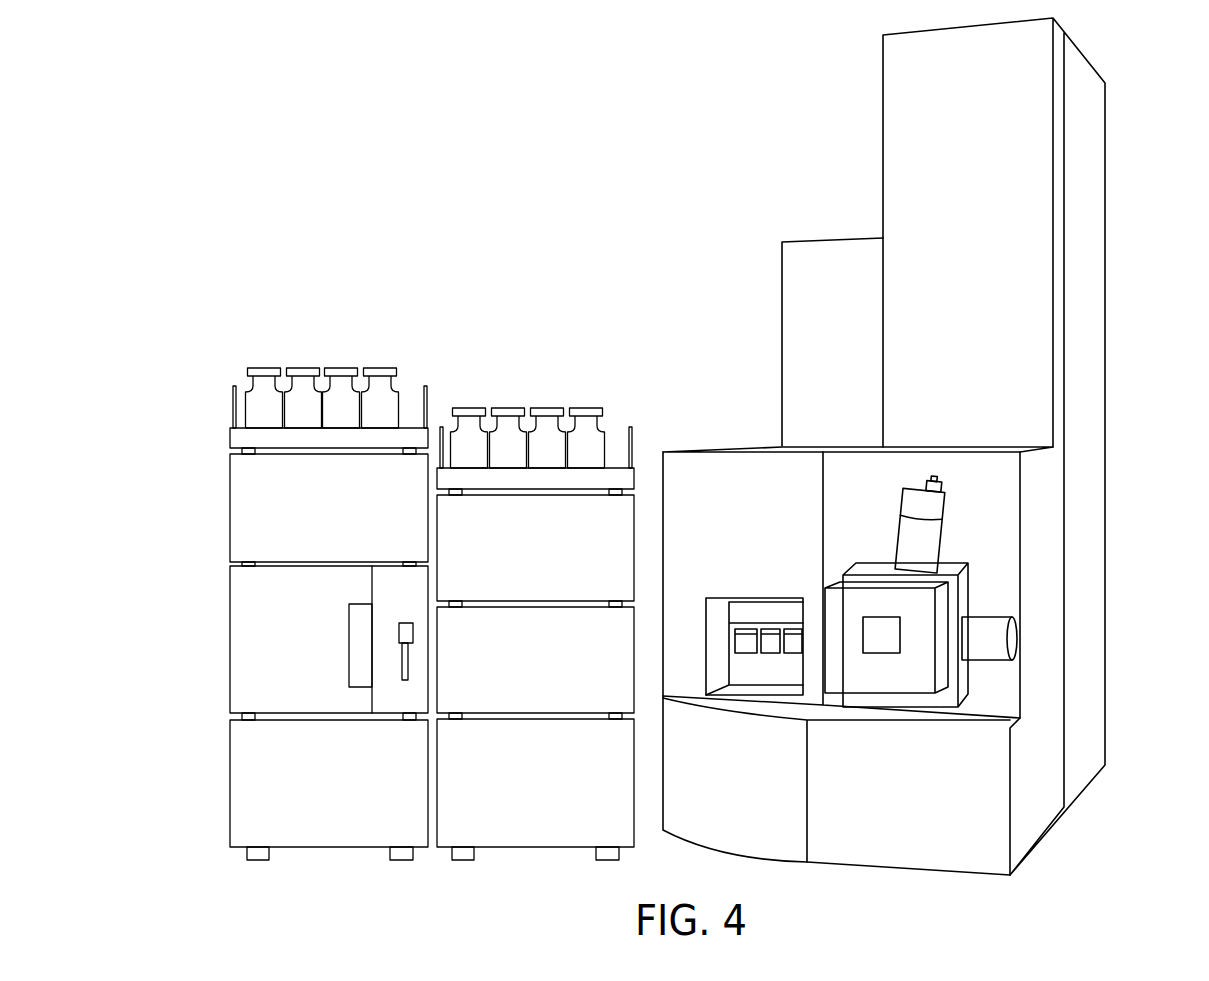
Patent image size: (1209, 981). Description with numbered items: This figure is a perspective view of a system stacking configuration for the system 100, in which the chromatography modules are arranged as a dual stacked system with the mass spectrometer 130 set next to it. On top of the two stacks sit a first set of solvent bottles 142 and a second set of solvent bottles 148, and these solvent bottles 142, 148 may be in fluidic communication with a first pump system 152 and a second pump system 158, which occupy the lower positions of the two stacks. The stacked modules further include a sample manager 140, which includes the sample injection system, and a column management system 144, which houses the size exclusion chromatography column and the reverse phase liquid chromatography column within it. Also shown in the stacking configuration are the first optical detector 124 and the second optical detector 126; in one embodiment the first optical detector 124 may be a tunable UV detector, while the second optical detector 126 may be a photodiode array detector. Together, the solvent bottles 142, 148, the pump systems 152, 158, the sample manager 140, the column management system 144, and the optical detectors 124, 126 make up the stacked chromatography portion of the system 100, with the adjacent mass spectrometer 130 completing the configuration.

The system 100 is at (230, 248).
The first optical detector 124 is at (230, 508).
The second optical detector 126 is at (634, 551).
The mass spectrometer 130 is at (1105, 265).
The sample manager 140 is at (230, 655).
The first set of solvent bottles 142 is at (379, 368).
The column management system 144 is at (634, 703).
The second set of solvent bottles 148 is at (509, 408).
The first pump system 152 is at (230, 790).
The second pump system 158 is at (634, 803).